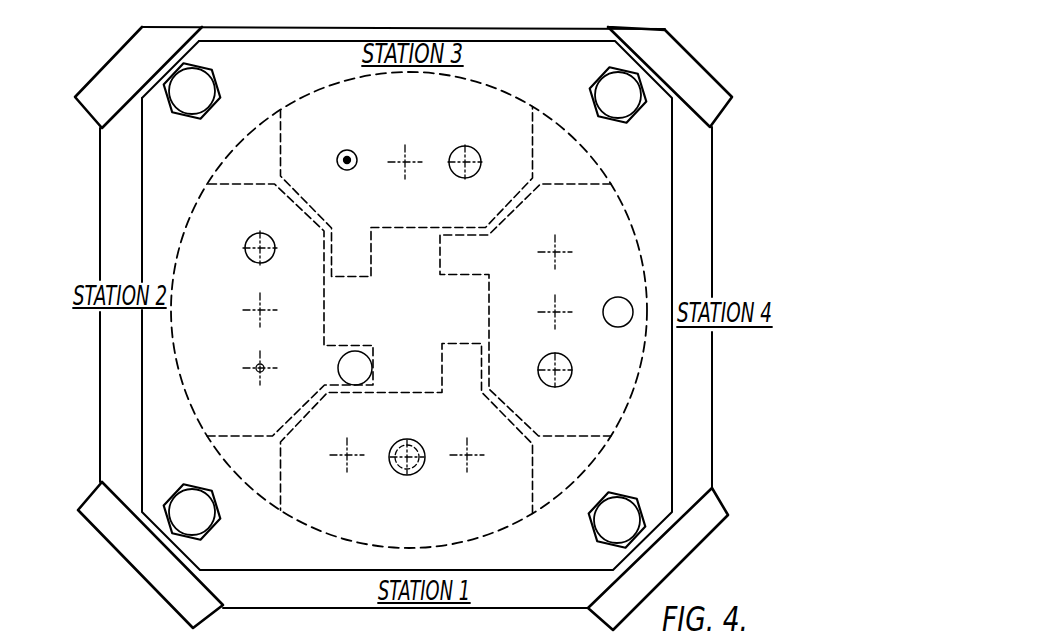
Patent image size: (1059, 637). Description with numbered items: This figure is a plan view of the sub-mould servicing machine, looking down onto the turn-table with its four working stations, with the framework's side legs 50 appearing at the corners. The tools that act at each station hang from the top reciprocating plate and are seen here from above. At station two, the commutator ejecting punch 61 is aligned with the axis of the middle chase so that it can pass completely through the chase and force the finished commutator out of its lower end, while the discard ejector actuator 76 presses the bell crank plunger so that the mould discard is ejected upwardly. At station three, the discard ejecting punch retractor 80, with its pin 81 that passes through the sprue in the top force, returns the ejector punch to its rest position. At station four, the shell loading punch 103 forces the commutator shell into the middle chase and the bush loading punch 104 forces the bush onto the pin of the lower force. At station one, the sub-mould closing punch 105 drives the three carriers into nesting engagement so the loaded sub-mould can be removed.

The side legs 50 is at (116, 60).
The commutator ejecting punch 61 is at (248, 239).
The discard ejector actuator 76 is at (338, 368).
The discard ejecting punch retractor 80 is at (357, 158).
The pin 81 is at (338, 157).
The shell loading punch 103 is at (572, 366).
The bush loading punch 104 is at (615, 299).
The sub-mould closing punch 105 is at (391, 447).